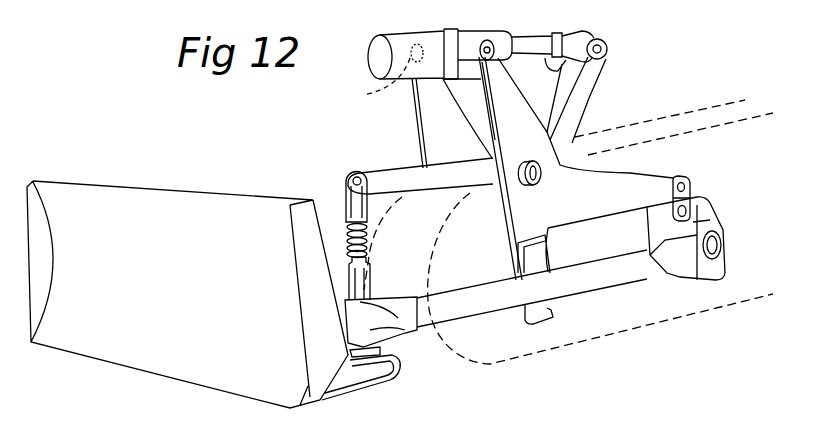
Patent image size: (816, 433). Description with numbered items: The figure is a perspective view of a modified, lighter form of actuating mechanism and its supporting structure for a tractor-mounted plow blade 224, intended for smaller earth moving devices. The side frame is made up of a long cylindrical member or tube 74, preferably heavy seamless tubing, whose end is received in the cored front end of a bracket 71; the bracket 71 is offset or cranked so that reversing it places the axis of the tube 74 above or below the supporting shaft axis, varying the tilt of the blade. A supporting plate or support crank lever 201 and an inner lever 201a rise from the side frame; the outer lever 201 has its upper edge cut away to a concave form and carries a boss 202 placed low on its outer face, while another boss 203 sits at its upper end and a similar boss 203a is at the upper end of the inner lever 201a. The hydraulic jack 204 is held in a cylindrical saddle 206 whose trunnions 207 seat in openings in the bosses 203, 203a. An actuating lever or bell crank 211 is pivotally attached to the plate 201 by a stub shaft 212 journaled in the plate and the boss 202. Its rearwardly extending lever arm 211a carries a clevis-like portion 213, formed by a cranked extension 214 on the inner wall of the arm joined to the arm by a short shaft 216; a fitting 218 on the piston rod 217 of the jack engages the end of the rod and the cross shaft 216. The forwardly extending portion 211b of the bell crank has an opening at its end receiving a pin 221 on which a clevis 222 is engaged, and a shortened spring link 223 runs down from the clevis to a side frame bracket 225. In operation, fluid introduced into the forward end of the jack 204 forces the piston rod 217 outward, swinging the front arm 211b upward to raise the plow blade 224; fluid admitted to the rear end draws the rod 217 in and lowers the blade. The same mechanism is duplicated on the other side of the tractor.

The hydraulic jack 204 is at (380, 38).
The cylindrical saddle 206 is at (456, 30).
The piston rod 217 is at (546, 40).
The short shaft 216 is at (585, 44).
The fitting 218 is at (608, 56).
The clevis-like portion 213 is at (598, 69).
The actuating lever or bell crank 211 is at (566, 126).
The rearwardly extending lever arm 211a is at (565, 110).
The forwardly extending portion 211b is at (392, 165).
The cranked extension 214 is at (552, 68).
The boss 203 is at (490, 80).
The boss 203a is at (370, 71).
The trunnions 207 is at (493, 105).
The inner lever 201a is at (436, 108).
The supporting plate or support crank lever 201 is at (610, 197).
The boss 202 is at (524, 166).
The stub shaft 212 is at (541, 173).
The pin 221 is at (351, 178).
The clevis 222 is at (352, 190).
The spring link 223 is at (368, 245).
The plow blade 224 is at (138, 220).
The side frame bracket 225 is at (415, 340).
The long cylindrical members or tubes 74 is at (612, 278).
The brackets 71 is at (686, 288).